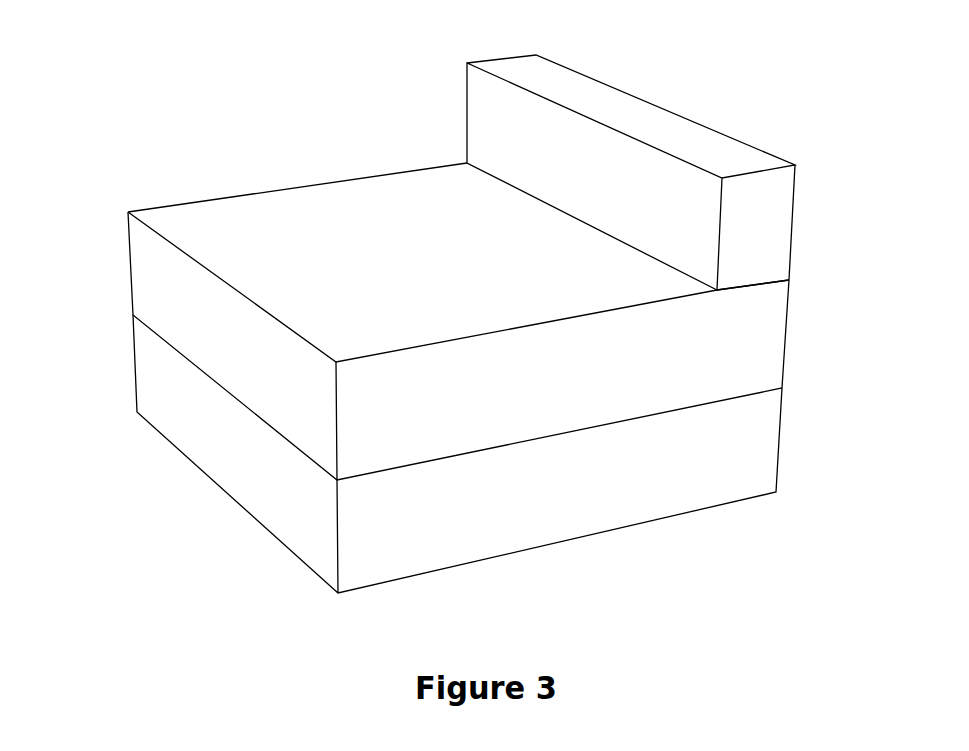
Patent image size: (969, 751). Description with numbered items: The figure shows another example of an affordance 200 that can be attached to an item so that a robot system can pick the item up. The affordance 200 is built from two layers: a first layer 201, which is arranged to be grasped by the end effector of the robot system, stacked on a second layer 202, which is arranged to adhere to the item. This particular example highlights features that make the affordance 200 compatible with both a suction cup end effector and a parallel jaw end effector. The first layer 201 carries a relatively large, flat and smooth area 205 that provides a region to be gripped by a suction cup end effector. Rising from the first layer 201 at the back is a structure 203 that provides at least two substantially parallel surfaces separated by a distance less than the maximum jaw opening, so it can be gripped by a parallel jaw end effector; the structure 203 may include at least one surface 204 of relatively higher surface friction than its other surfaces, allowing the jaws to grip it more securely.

The affordance 200 is at (468, 303).
The first layer 201 is at (783, 342).
The second layer 202 is at (778, 442).
The structure 203 is at (795, 208).
The surface 204 is at (480, 90).
The flat and smooth area 205 is at (183, 227).